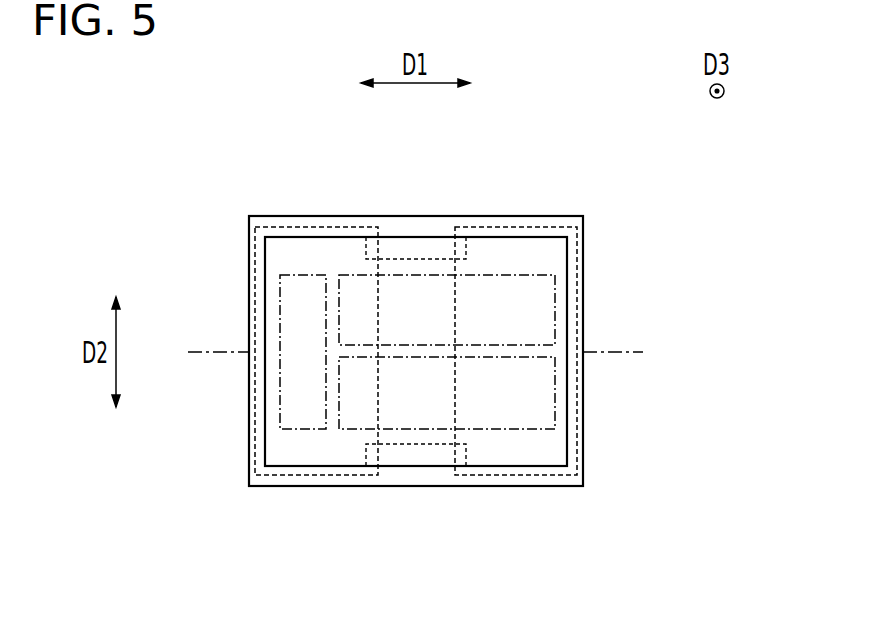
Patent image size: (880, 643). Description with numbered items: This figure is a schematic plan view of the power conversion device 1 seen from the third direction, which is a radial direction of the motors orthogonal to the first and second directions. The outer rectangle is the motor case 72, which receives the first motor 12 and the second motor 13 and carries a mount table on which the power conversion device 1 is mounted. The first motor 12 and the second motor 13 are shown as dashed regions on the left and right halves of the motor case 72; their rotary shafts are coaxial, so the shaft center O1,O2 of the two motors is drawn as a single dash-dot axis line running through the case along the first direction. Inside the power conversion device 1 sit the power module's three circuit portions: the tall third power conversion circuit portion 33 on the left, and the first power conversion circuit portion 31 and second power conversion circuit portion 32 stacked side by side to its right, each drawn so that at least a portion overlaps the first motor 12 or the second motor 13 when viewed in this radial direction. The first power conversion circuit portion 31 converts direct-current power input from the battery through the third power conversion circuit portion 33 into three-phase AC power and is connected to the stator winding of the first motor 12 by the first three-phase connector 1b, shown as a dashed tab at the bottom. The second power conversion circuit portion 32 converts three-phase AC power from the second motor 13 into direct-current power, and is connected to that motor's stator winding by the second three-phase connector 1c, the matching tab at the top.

The power conversion device 1 is at (521, 233).
The first three-phase connector 1b is at (466, 452).
The second three-phase connector 1c is at (462, 258).
The first motor 12 is at (569, 224).
The second motor 13 is at (292, 224).
The first power conversion circuit portion 31 is at (559, 408).
The second power conversion circuit portion 32 is at (559, 303).
The third power conversion circuit portion 33 is at (276, 303).
The motor case 72 is at (587, 254).
The shaft centers of the first motor and second motor O1,O2 is at (632, 352).